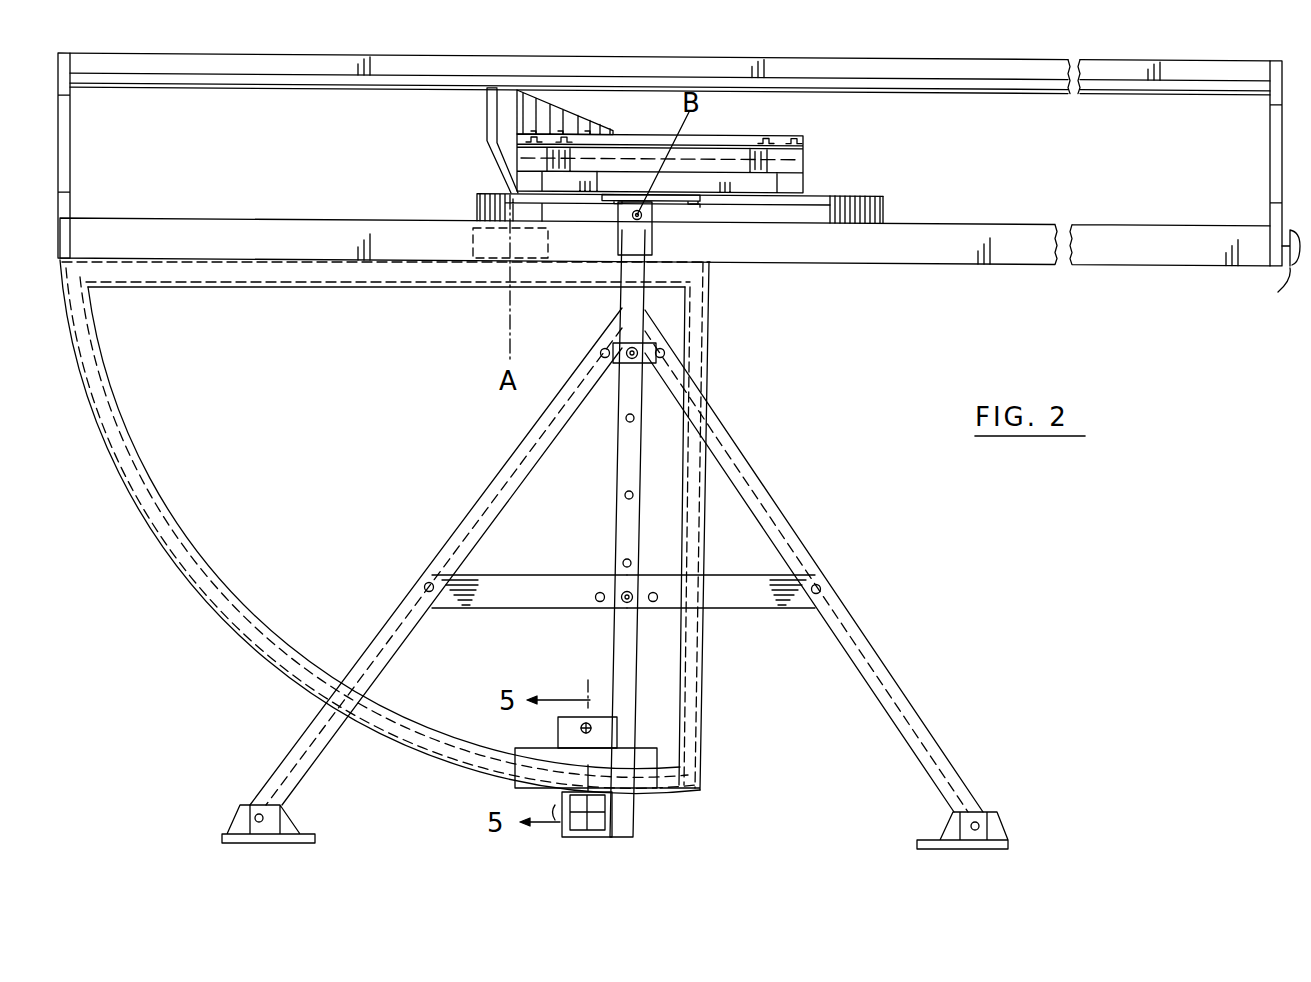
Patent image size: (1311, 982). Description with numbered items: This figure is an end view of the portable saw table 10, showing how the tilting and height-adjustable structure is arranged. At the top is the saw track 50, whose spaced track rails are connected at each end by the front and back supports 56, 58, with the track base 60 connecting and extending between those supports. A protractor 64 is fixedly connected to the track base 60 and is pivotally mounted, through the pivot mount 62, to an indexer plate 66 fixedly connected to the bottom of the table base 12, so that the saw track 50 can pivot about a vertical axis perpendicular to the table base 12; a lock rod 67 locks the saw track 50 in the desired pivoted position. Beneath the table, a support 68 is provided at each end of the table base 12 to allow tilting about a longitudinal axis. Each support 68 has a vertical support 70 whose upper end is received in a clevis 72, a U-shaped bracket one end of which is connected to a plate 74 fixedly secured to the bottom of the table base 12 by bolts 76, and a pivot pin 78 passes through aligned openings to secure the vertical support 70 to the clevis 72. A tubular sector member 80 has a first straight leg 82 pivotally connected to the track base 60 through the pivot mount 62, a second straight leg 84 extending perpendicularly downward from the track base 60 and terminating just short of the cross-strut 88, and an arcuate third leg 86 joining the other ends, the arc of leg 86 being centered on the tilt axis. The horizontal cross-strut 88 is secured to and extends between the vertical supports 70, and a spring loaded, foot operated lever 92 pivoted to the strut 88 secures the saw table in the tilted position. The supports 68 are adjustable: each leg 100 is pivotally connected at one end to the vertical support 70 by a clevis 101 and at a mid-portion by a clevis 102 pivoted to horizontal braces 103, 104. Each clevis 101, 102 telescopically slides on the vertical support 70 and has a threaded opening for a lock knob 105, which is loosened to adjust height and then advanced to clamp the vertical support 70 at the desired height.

The saw table 10 is at (910, 49).
The table base 12 is at (830, 165).
The saw track 50 is at (503, 47).
The front support 56 is at (73, 172).
The back support 58 is at (1268, 158).
The track base 60 is at (873, 266).
The pivot mount 62 is at (473, 238).
The protractor 64 is at (833, 223).
The indexer plate 66 is at (880, 193).
The lock rod 67 is at (1286, 282).
The support 68 is at (862, 594).
The vertical support 70 is at (617, 635).
The clevis 72 is at (655, 240).
The plate 74 is at (702, 206).
The bolts 76 is at (613, 205).
The pivot pin 78 is at (637, 215).
The sector member 80 is at (226, 648).
The first straight leg 82 is at (292, 290).
The second straight leg 84 is at (705, 690).
The arcuate third leg 86 is at (190, 584).
The cross-strut 88 is at (640, 827).
The foot operated lever 92 is at (565, 729).
The leg 100 is at (278, 760).
The clevis 101 is at (607, 382).
The clevis 102 is at (620, 575).
The horizontal brace 103 is at (765, 600).
The horizontal brace 104 is at (492, 600).
The lock knob 105 is at (638, 352).